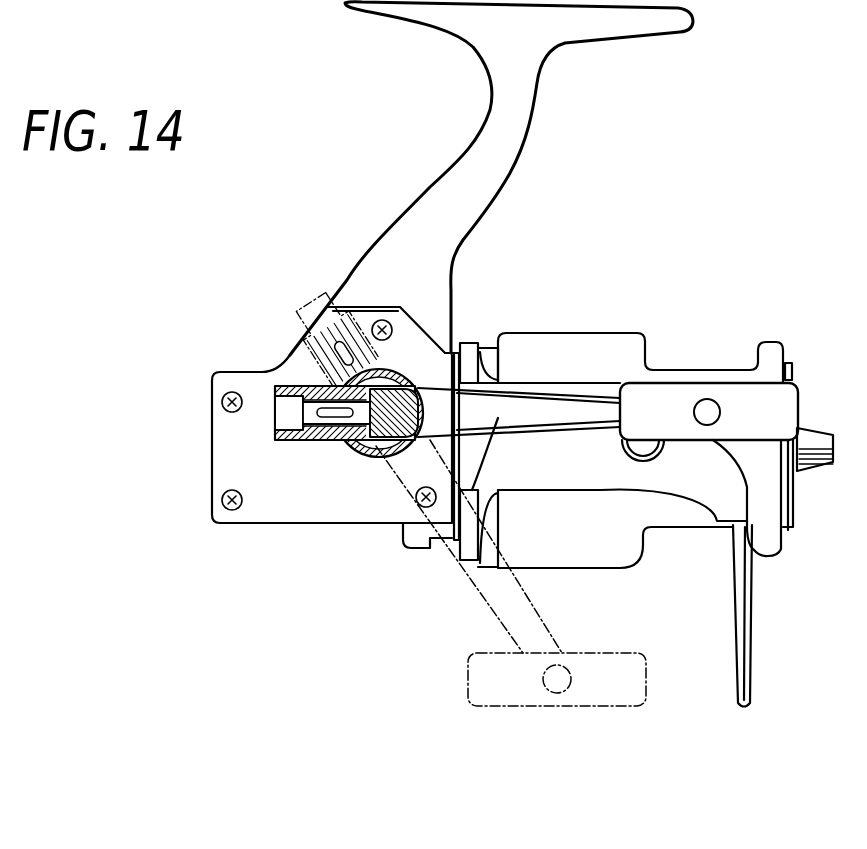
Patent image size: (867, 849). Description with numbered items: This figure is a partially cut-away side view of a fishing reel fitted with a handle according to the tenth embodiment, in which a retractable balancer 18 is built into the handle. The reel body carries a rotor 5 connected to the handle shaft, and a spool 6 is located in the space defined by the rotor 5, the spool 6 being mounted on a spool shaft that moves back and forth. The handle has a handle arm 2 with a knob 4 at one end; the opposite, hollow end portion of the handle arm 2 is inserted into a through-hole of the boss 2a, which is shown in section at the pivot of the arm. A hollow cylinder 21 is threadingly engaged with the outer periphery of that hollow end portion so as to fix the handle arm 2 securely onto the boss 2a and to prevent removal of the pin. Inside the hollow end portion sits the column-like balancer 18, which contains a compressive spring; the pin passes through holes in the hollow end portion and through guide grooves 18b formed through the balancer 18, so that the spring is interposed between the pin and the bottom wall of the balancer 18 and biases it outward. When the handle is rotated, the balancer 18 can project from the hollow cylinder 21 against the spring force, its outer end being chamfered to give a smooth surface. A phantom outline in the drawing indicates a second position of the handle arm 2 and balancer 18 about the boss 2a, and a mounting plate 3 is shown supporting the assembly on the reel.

The handle arm 2 is at (498, 418).
The boss 2a is at (372, 449).
The mounting plate 3 is at (247, 385).
The knob 4 is at (787, 407).
The rotor 5 is at (740, 602).
The spool 6 is at (685, 373).
The balancer 18 is at (288, 410).
The guide grooves 18b is at (290, 368).
The hollow cylinder 21 is at (297, 436).